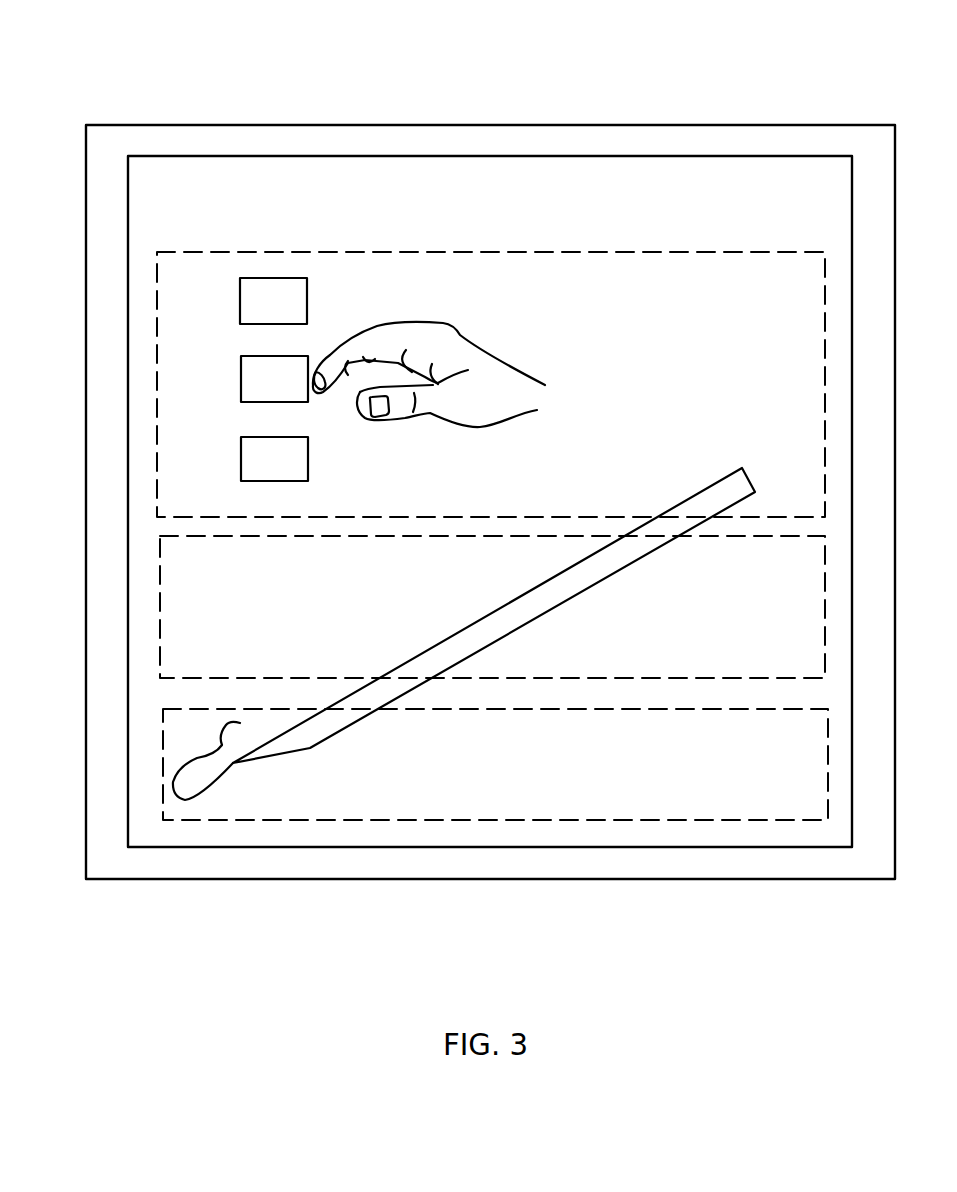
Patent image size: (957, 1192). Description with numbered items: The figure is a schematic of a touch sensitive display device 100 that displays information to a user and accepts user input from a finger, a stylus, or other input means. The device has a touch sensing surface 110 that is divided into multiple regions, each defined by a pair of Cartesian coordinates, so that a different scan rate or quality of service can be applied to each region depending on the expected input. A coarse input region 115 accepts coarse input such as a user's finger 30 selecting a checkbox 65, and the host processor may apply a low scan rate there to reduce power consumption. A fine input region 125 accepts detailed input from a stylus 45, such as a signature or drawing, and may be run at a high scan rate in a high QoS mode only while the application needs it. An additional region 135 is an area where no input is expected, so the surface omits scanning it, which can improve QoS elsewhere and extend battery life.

The touch sensitive display device 100 is at (533, 126).
The touch sensing surface 110 is at (797, 195).
The coarse input region 115 is at (248, 252).
The checkbox 65 is at (249, 380).
The user's finger 30 is at (458, 352).
The stylus 45 is at (602, 565).
The additional region 135 is at (158, 635).
The fine input region 125 is at (162, 782).